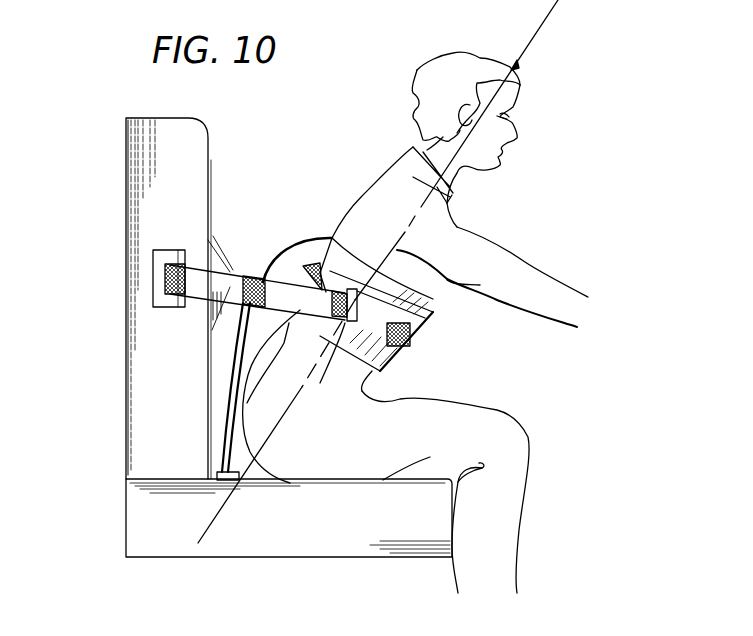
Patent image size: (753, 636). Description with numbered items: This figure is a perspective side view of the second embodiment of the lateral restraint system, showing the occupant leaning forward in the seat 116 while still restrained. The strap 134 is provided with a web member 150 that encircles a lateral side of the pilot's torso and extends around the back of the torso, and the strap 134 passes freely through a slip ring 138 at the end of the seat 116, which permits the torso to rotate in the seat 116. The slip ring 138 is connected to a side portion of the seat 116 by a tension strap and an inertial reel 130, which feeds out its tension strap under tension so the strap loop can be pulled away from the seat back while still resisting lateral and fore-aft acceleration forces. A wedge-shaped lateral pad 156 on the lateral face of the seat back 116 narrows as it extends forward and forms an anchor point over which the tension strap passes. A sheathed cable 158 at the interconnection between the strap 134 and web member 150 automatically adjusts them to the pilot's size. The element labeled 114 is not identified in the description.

The seat 114 is at (127, 521).
The seat 116 is at (153, 357).
The inertial reel 130 is at (153, 263).
The strap 134 is at (413, 340).
The slip ring 138 is at (342, 366).
The web member 150 is at (422, 292).
The lateral pad 156 is at (211, 268).
The cable 158 is at (307, 228).